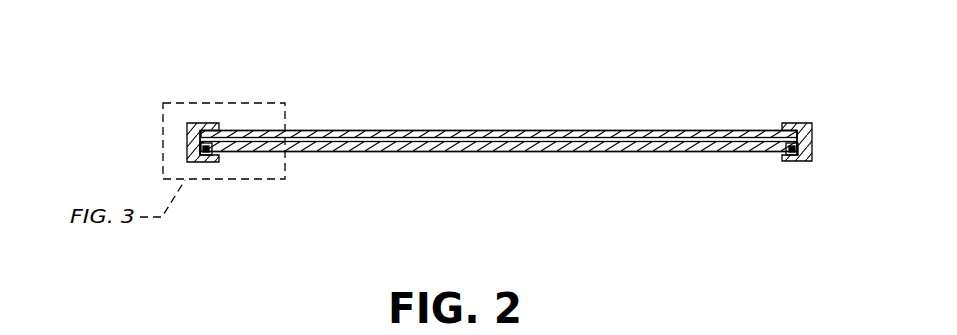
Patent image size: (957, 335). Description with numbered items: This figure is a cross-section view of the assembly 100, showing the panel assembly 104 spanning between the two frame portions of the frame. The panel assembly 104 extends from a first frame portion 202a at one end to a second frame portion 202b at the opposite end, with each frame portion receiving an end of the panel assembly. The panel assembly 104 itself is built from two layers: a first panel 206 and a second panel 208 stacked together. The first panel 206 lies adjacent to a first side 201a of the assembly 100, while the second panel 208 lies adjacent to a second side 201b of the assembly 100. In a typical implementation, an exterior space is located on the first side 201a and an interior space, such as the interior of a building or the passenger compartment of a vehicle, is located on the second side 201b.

The assembly 100 is at (123, 56).
The panel assembly 104 is at (322, 110).
The first side 201a is at (517, 113).
The second side 201b is at (517, 188).
The first frame portion 202a is at (208, 122).
The second frame portion 202b is at (805, 122).
The first panel 206 is at (660, 130).
The second panel 208 is at (697, 147).